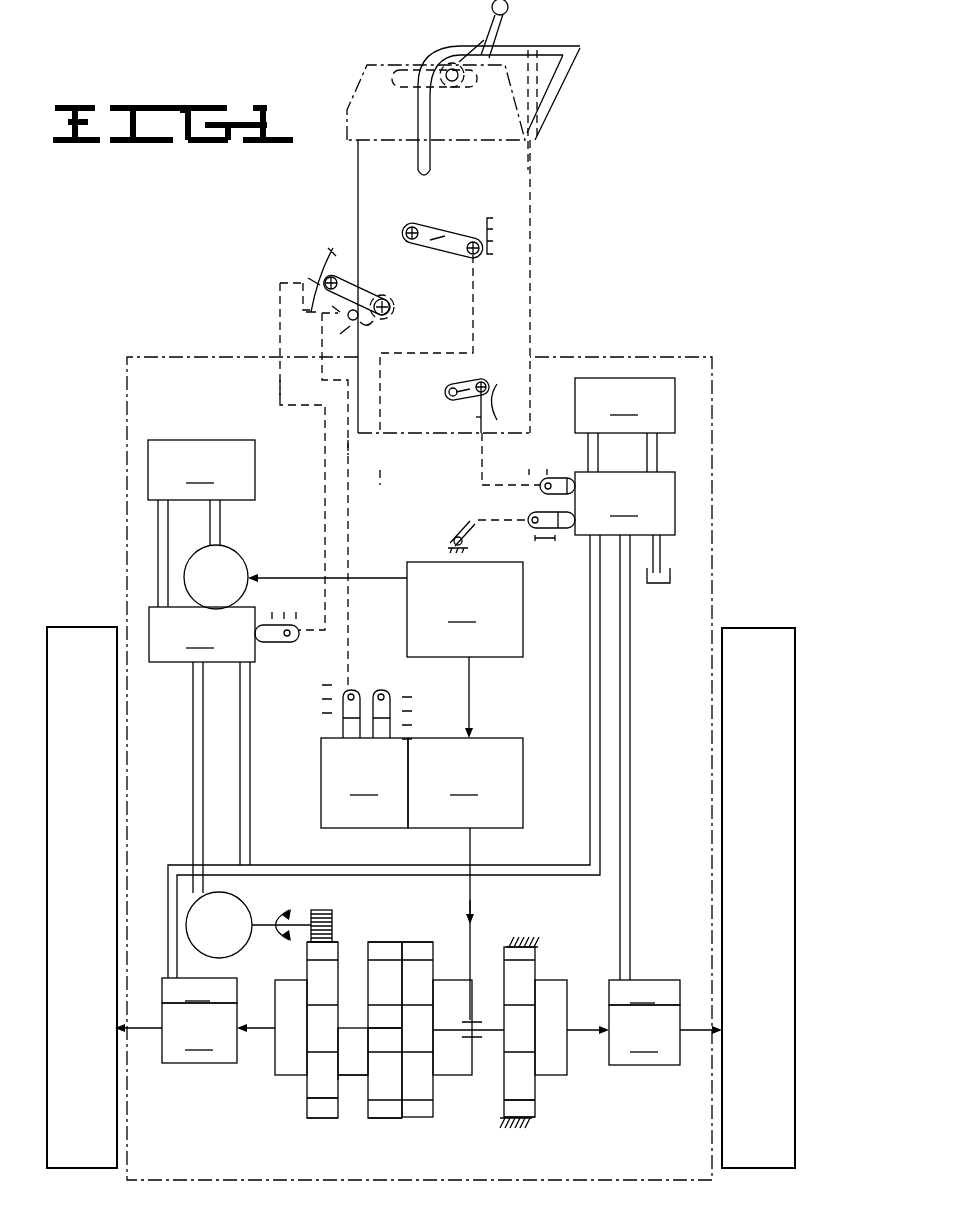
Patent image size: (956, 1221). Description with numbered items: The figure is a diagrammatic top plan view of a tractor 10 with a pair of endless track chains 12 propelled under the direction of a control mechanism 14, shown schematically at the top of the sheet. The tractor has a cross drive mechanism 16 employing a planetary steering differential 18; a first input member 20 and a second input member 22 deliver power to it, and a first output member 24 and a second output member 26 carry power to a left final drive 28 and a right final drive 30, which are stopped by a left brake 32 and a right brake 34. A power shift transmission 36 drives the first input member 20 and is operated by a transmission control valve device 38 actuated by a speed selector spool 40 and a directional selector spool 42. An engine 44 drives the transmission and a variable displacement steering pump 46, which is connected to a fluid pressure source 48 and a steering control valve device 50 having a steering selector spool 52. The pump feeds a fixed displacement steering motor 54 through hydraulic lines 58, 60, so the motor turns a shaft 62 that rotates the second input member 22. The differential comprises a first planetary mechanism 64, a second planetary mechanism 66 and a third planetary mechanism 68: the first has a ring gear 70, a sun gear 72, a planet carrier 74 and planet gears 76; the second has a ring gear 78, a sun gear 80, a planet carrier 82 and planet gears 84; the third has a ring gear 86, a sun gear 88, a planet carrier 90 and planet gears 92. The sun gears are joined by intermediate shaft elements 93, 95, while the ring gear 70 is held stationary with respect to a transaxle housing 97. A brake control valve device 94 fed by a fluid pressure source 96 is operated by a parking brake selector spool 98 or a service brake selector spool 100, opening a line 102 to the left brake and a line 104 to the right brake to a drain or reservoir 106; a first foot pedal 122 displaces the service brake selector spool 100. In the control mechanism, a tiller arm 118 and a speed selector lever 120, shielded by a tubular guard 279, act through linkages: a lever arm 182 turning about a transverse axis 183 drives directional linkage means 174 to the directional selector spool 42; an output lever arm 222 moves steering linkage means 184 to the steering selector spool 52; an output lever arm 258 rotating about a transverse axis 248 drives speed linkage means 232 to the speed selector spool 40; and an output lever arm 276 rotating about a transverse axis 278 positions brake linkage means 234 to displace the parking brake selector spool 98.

The tractor 10 is at (162, 358).
The endless track chains 12 is at (78, 627).
The control mechanism 14 is at (358, 168).
The cross drive mechanism 16 is at (507, 918).
The planetary steering differential 18 is at (373, 942).
The first input member 20 is at (470, 906).
The second input member 22 is at (316, 910).
The first output member 24 is at (263, 1031).
The second output member 26 is at (580, 1031).
The left final drive 28 is at (199, 1033).
The right final drive 30 is at (644, 1035).
The left brake 32 is at (199, 990).
The right brake 34 is at (644, 992).
The power shift transmission 36 is at (465, 879).
The transmission control valve device 38 is at (364, 783).
The speed selector spool 40 is at (388, 700).
The directional selector spool 42 is at (343, 728).
The engine 44 is at (385, 650).
The variable displacement steering pump 46 is at (242, 560).
The fluid pressure source 48 is at (201, 523).
The steering control valve device 50 is at (202, 634).
The steering selector spool 52 is at (278, 648).
The fixed displacement steering motor 54 is at (228, 957).
The hydraulic line 58 is at (193, 752).
The hydraulic line 60 is at (250, 780).
The shaft 62 is at (273, 910).
The first planetary mechanism 64 is at (506, 1110).
The second planetary mechanism 66 is at (415, 1118).
The third planetary mechanism 68 is at (316, 1118).
The ring gear 70 is at (530, 1112).
The sun gear 72 is at (527, 1031).
The planet carrier 74 is at (550, 980).
The planet gears 76 is at (525, 967).
The ring gear 78 is at (428, 1106).
The sun gear 80 is at (410, 1031).
The planet carrier 82 is at (455, 980).
The planet gears 84 is at (408, 984).
The ring gear 86 is at (318, 1108).
The sun gear 88 is at (315, 1015).
The planet carrier 90 is at (356, 1077).
The planet gears 92 is at (334, 1068).
The intermediate shaft element 93 is at (383, 1028).
The brake control valve device 94 is at (625, 503).
The intermediate shaft element 95 is at (493, 1036).
The fluid pressure source 96 is at (625, 425).
The transaxle housing 97 is at (530, 1128).
The parking brake selector spool 98 is at (545, 494).
The service brake selector spool 100 is at (567, 530).
The line 102 is at (590, 683).
The line 104 is at (632, 712).
The drain or reservoir 106 is at (662, 552).
The tiller arm 118 is at (458, 42).
The speed selector lever 120 is at (508, 10).
The first foot pedal 122 is at (452, 526).
The directional linkage means 174 is at (351, 457).
The lever arm 182 is at (378, 319).
The transverse axis 183 is at (390, 304).
The steering linkage means 184 is at (282, 389).
The output lever arm 222 is at (352, 283).
The speed linkage means 232 is at (382, 481).
The brake linkage means 234 is at (481, 417).
The transverse axis 248 is at (410, 226).
The output lever arm 258 is at (430, 234).
The output lever arm 276 is at (470, 382).
The transverse axis 278 is at (448, 394).
The tubular guard 279 is at (580, 47).